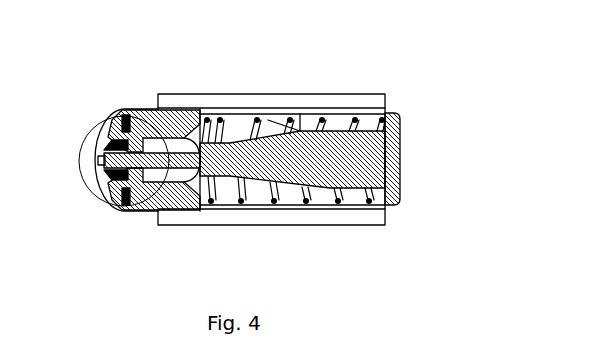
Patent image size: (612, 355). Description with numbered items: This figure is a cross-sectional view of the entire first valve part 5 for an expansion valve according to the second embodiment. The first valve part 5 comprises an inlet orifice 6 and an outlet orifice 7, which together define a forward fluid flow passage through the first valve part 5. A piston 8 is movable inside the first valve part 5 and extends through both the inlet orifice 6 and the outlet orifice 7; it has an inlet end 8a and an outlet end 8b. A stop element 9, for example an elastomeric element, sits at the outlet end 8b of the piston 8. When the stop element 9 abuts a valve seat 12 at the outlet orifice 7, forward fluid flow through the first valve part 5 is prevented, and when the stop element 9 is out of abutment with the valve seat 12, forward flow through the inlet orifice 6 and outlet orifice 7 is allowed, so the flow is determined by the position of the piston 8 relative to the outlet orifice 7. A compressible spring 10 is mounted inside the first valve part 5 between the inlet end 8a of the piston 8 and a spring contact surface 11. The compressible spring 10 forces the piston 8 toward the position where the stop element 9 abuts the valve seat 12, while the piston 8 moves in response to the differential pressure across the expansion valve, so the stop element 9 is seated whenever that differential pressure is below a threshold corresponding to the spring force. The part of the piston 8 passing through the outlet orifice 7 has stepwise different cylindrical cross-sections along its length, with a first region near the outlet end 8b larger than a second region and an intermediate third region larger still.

The first valve part 5 is at (185, 124).
The inlet orifice 6 is at (173, 208).
The outlet orifice 7 is at (126, 205).
The piston 8 is at (293, 136).
The inlet end 8a is at (400, 167).
The outlet end 8b is at (108, 150).
The stop element 9 is at (102, 175).
The compressible spring 10 is at (318, 118).
The spring contact surface 11 is at (225, 207).
The valve seat 12 is at (126, 135).